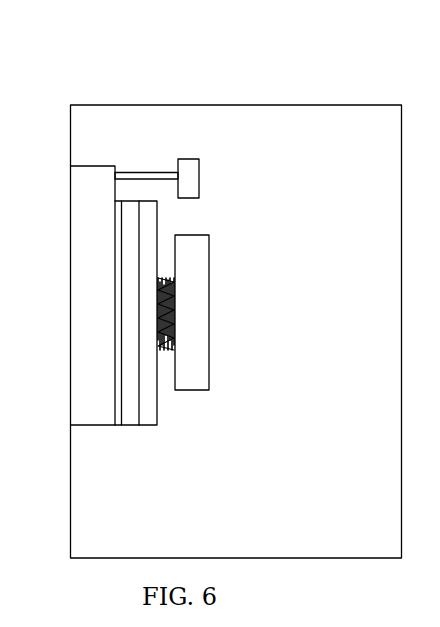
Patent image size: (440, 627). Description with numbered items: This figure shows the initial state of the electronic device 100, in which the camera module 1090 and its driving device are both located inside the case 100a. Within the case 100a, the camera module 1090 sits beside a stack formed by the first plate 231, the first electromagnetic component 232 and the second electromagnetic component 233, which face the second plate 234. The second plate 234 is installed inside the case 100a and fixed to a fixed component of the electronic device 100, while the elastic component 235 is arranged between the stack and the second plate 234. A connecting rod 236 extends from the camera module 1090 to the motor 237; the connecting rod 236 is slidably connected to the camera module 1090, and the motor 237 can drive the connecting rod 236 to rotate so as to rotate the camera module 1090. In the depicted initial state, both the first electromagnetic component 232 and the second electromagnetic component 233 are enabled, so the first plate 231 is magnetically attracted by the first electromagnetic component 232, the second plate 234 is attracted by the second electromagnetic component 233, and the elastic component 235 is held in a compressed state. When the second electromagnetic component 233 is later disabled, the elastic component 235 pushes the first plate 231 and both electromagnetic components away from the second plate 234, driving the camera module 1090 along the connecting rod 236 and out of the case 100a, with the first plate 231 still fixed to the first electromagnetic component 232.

The electronic device 100 is at (203, 54).
The case 100a is at (337, 105).
The camera module 1090 is at (90, 212).
The first plate 231 is at (119, 272).
The first electromagnetic component 232 is at (128, 227).
The second electromagnetic component 233 is at (148, 245).
The second plate 234 is at (202, 290).
The elastic component 235 is at (162, 352).
The connecting rod 236 is at (157, 177).
The motor 237 is at (190, 170).